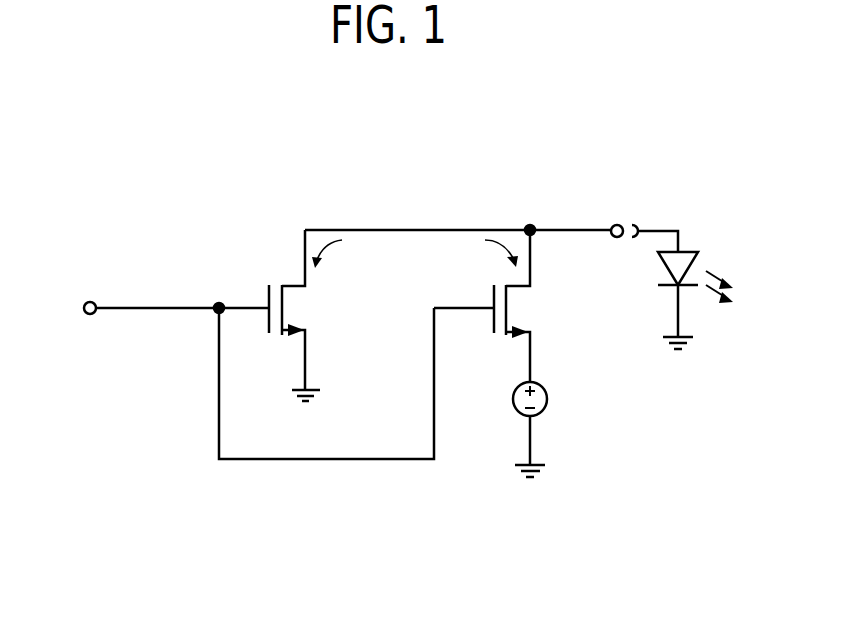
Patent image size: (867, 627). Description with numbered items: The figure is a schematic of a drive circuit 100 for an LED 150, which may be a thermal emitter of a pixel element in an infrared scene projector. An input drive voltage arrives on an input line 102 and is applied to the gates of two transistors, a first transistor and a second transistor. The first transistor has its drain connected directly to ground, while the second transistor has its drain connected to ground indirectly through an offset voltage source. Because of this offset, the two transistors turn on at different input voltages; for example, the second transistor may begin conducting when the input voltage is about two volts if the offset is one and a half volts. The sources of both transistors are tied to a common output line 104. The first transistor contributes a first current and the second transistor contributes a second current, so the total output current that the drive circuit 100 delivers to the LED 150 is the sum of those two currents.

The drive circuit 100 is at (116, 108).
The input line 102 is at (178, 308).
The output line 104 is at (407, 230).
The LED 150 is at (691, 245).